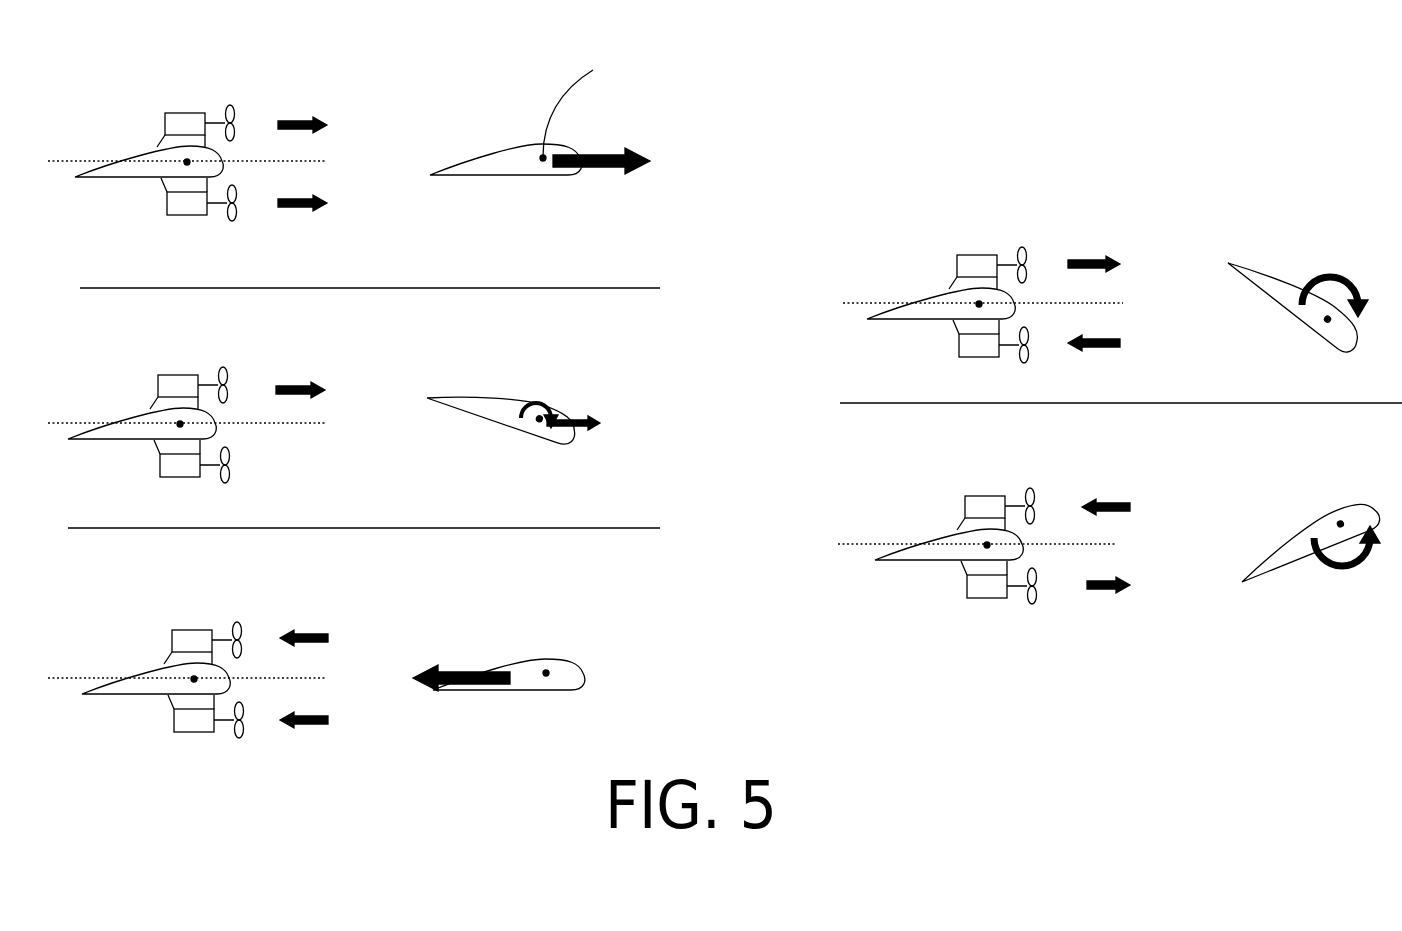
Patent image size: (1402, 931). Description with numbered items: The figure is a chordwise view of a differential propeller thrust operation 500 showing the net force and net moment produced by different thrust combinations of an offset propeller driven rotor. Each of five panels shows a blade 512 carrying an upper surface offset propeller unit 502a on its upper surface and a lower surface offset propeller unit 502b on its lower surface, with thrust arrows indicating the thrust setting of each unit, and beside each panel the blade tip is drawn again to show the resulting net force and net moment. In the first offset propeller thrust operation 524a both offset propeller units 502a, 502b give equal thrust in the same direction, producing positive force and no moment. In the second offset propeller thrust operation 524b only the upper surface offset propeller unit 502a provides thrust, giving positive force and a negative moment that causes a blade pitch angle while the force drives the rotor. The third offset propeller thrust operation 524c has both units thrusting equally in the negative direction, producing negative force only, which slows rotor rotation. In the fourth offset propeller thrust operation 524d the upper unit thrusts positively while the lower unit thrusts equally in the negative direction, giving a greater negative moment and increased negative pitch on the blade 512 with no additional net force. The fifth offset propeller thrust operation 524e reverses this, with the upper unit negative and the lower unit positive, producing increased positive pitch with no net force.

The differential propeller thrust operation 500 is at (1372, 83).
The upper surface offset propeller unit 502a is at (200, 98).
The lower surface offset propeller unit 502b is at (166, 232).
The blade 512 is at (147, 127).
The first offset propeller thrust operation 524a is at (349, 167).
The second offset propeller thrust operation 524b is at (324, 400).
The third offset propeller thrust operation 524c is at (316, 648).
The fourth offset propeller thrust operation 524d is at (1105, 268).
The fifth offset propeller thrust operation 524e is at (1110, 518).